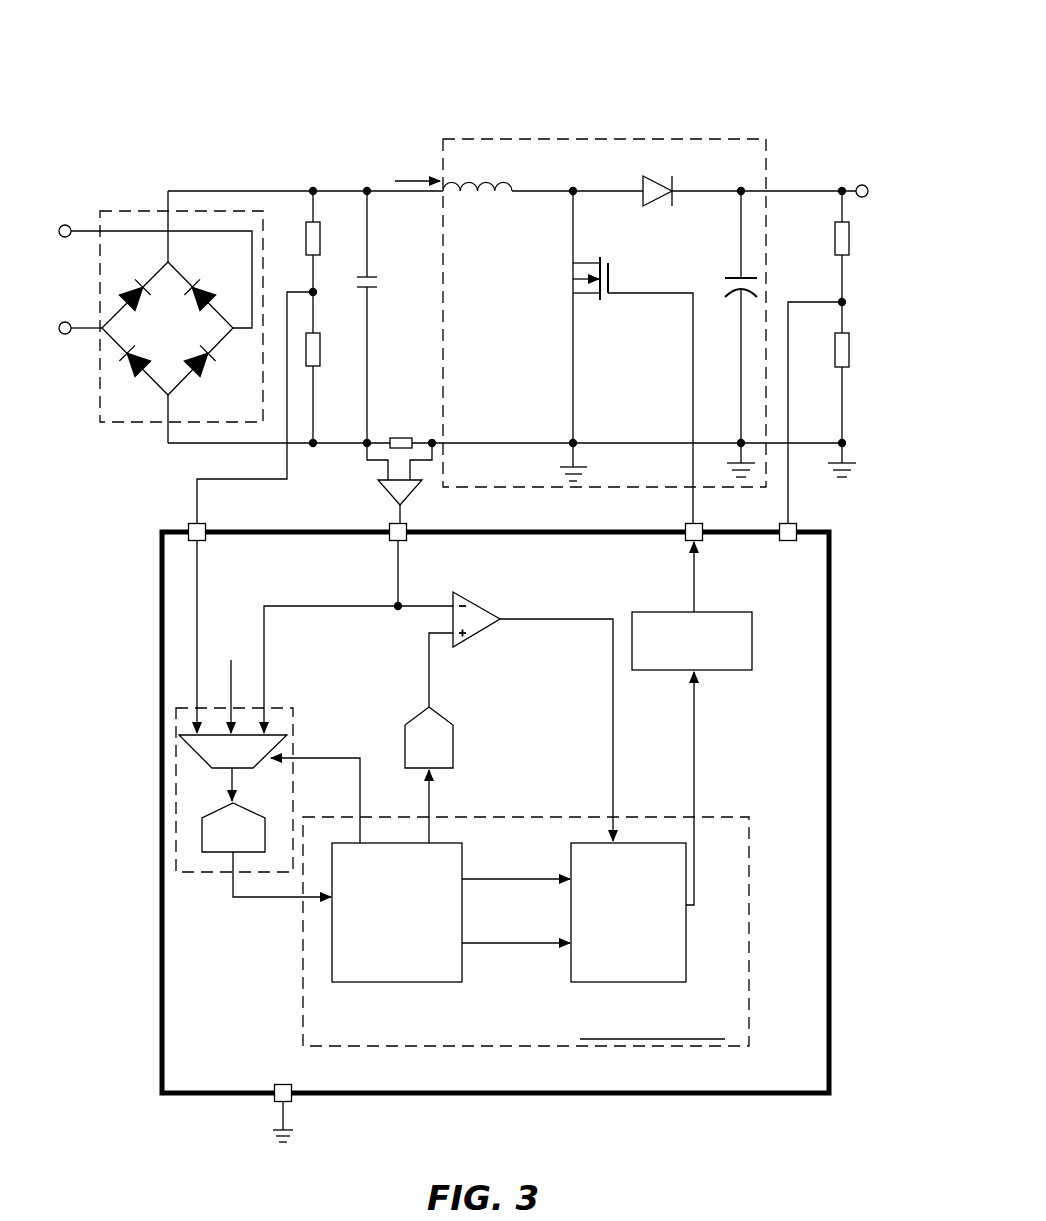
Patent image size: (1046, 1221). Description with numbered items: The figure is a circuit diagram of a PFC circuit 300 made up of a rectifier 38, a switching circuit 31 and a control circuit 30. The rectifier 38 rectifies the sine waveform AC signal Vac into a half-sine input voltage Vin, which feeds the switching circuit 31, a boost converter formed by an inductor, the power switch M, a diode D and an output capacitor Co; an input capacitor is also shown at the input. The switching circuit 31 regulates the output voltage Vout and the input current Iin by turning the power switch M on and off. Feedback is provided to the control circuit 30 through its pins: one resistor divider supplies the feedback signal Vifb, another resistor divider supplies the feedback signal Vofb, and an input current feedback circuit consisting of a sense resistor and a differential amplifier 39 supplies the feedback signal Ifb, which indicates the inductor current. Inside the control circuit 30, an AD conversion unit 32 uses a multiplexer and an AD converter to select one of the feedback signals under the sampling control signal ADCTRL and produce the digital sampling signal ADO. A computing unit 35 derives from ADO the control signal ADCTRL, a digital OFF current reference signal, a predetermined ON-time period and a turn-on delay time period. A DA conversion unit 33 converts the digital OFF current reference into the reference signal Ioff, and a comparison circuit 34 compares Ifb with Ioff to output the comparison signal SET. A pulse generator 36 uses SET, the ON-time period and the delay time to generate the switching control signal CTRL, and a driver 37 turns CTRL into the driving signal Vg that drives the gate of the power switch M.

The PFC circuit 300 is at (468, 577).
The rectifier 38 is at (109, 211).
The switching circuit 31 is at (585, 139).
The differential amplifier 39 is at (408, 496).
The control circuit 30 is at (520, 819).
The AD conversion unit 32 is at (183, 873).
The DA conversion unit 33 is at (453, 751).
The comparison circuit 34 is at (479, 604).
The computing unit 35 is at (373, 982).
The pulse generator 36 is at (588, 982).
The driver 37 is at (723, 612).